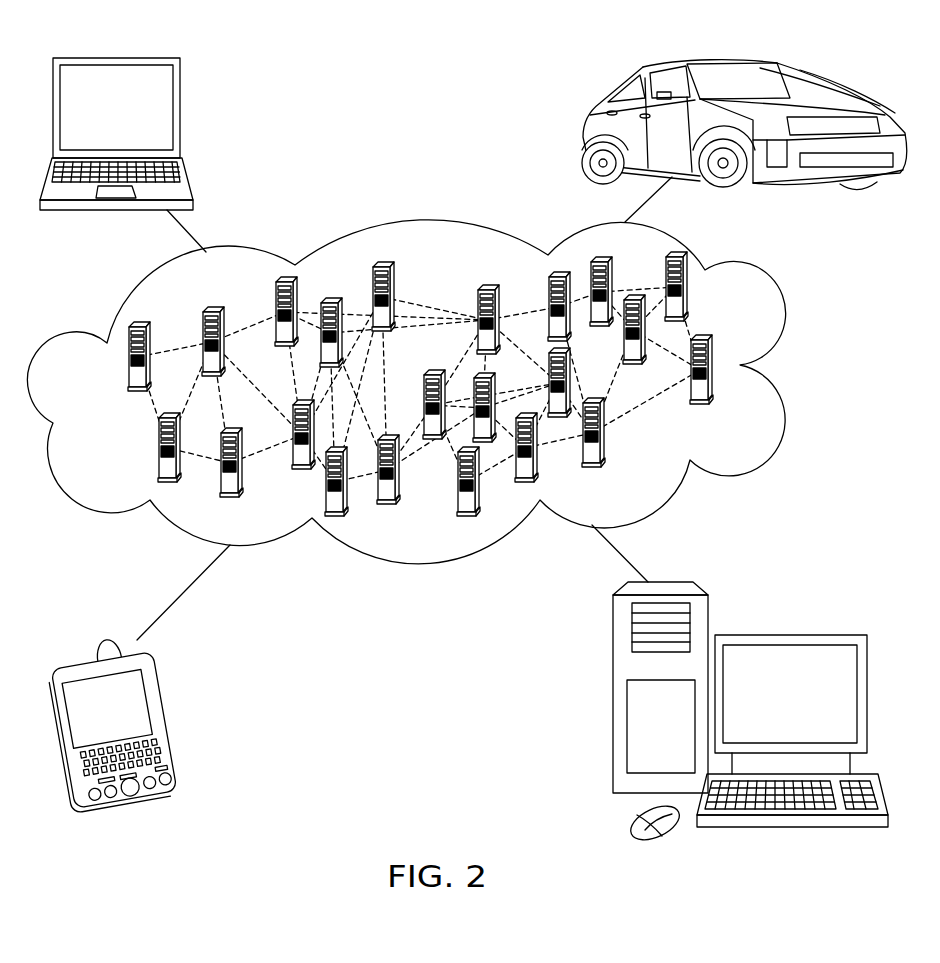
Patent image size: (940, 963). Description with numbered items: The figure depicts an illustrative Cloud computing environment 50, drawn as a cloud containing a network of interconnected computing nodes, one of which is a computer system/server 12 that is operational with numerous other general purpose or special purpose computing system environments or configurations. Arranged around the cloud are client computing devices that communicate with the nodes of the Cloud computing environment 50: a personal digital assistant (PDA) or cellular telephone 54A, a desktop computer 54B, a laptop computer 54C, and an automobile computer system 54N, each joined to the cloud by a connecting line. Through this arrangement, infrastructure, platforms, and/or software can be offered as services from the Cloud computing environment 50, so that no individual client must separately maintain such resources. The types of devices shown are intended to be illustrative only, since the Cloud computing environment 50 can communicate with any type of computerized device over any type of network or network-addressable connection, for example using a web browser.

The computer system/server 12 is at (745, 401).
The Cloud computing environment 50 is at (784, 368).
The personal digital assistant (PDA) or cellular telephone 54A is at (176, 721).
The desktop computer 54B is at (786, 634).
The laptop computer 54C is at (180, 115).
The automobile computer system 54N is at (586, 131).